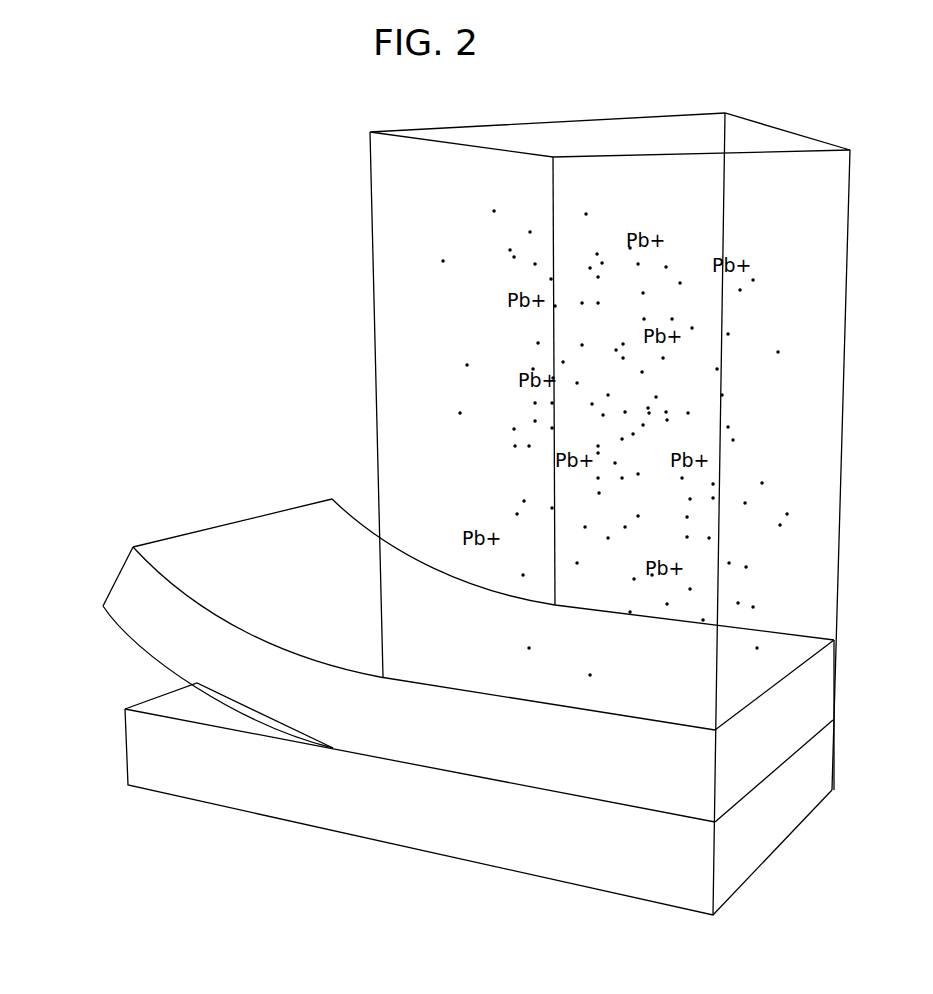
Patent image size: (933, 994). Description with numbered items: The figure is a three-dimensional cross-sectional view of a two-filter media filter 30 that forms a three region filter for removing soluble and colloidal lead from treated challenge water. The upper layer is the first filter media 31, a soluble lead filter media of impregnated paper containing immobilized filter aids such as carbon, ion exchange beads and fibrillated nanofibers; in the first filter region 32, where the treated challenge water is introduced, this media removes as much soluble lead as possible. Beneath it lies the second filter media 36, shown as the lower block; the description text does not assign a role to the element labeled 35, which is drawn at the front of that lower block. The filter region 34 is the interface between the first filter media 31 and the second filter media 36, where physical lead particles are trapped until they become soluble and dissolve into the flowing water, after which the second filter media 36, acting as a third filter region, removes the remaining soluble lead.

The two-filter media filter 30 is at (476, 707).
The first filter media 31 is at (468, 660).
The first filter region 32 is at (843, 640).
The filter region 34 is at (843, 677).
The substrate 35 is at (478, 799).
The second filter media 36 is at (843, 718).